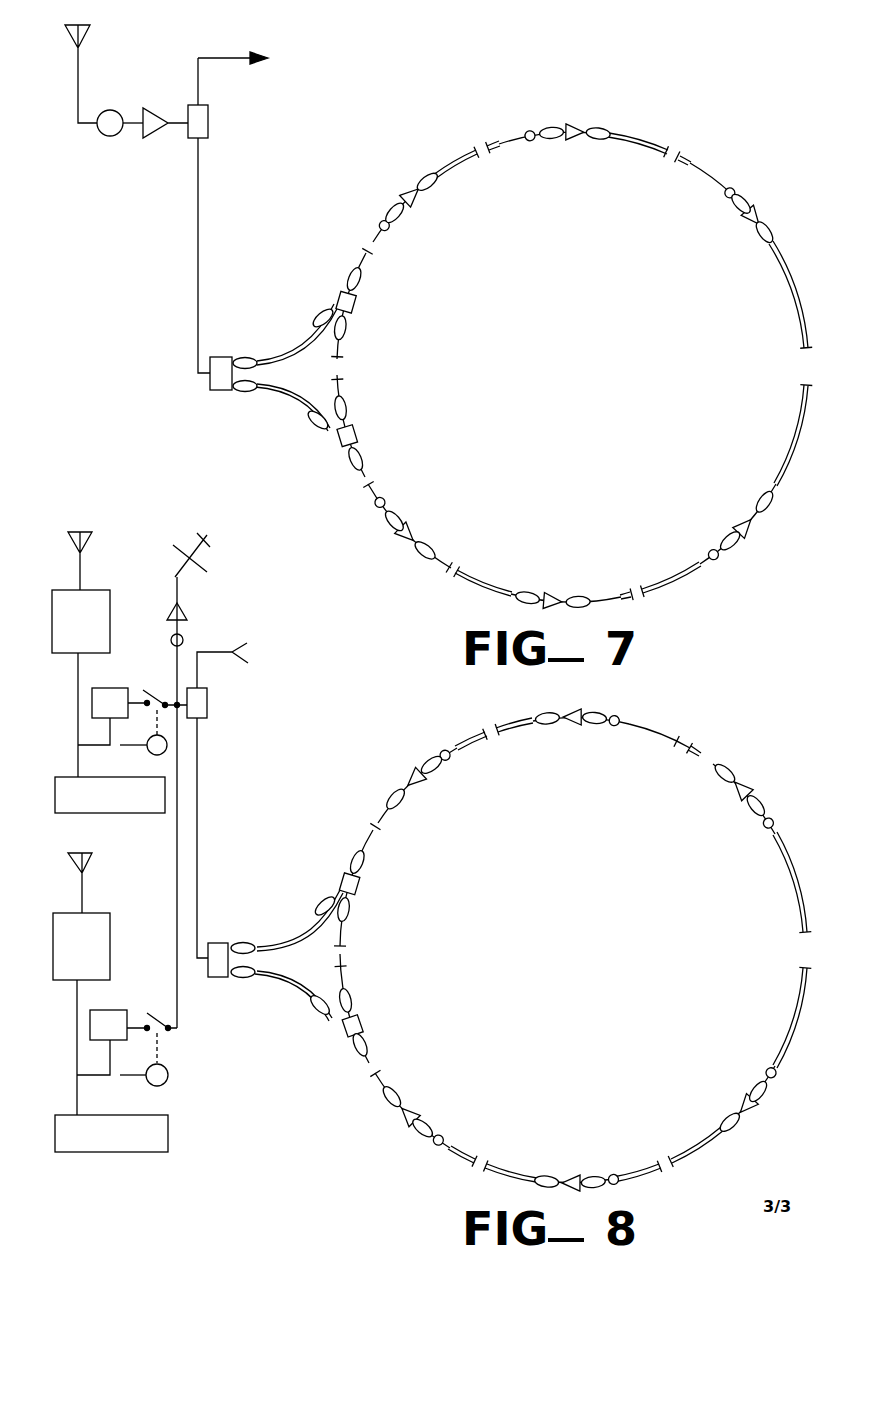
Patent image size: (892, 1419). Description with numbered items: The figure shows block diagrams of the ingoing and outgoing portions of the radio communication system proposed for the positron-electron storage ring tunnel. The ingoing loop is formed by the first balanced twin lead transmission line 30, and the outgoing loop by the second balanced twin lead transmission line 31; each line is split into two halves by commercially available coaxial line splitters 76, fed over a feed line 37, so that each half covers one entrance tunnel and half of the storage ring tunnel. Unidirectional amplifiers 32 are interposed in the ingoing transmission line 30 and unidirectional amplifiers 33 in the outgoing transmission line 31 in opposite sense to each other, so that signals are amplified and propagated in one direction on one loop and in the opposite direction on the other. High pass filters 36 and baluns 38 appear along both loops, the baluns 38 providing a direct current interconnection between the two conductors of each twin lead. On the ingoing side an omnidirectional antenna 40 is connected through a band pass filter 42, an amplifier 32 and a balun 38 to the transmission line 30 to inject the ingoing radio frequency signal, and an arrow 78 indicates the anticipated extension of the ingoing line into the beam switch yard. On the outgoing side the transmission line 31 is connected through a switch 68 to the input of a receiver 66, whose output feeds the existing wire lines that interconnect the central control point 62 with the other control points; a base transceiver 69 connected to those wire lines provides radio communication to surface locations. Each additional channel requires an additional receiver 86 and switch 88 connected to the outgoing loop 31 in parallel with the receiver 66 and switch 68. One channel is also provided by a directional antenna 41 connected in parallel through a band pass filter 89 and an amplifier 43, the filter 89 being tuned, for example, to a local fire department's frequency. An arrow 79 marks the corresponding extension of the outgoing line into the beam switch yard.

In FIG. 7, the first balanced twin lead transmission line 30 is at (273, 360).
In FIG. 8, the second balanced twin lead transmission line 31 is at (483, 730).
In FIG. 7, the unidirectional amplifier 32 is at (154, 107).
In FIG. 8, the unidirectional amplifier 33 is at (413, 780).
In FIG. 7, the high pass filter 36 is at (388, 232).
In FIG. 8, the high pass filter 36 is at (447, 753).
In FIG. 7, the feed line 37 is at (197, 255).
In FIG. 8, the feed line 37 is at (203, 835).
In FIG. 7, the balun 38 is at (392, 210).
In FIG. 8, the balun 38 is at (440, 777).
In FIG. 7, the omnidirectional antenna 40 is at (90, 37).
In FIG. 8, the directional antenna 41 is at (182, 537).
In FIG. 7, the band pass filter 42 is at (112, 108).
In FIG. 8, the amplifier 43 is at (183, 610).
In FIG. 8, the central control point 62 is at (133, 815).
In FIG. 8, the receiver 66 is at (115, 687).
In FIG. 8, the switch 68 is at (150, 755).
In FIG. 8, the base transceiver 69 is at (100, 590).
In FIG. 7, the splitter/coupler box 76 is at (210, 118).
In FIG. 8, the splitter/coupler box 76 is at (208, 707).
In FIG. 7, the arrow 78 is at (243, 55).
In FIG. 8, the arrow 79 is at (250, 643).
In FIG. 8, the additional receiver 86 is at (118, 1010).
In FIG. 8, the additional switch 88 is at (165, 1087).
In FIG. 8, the band pass filter 89 is at (183, 638).